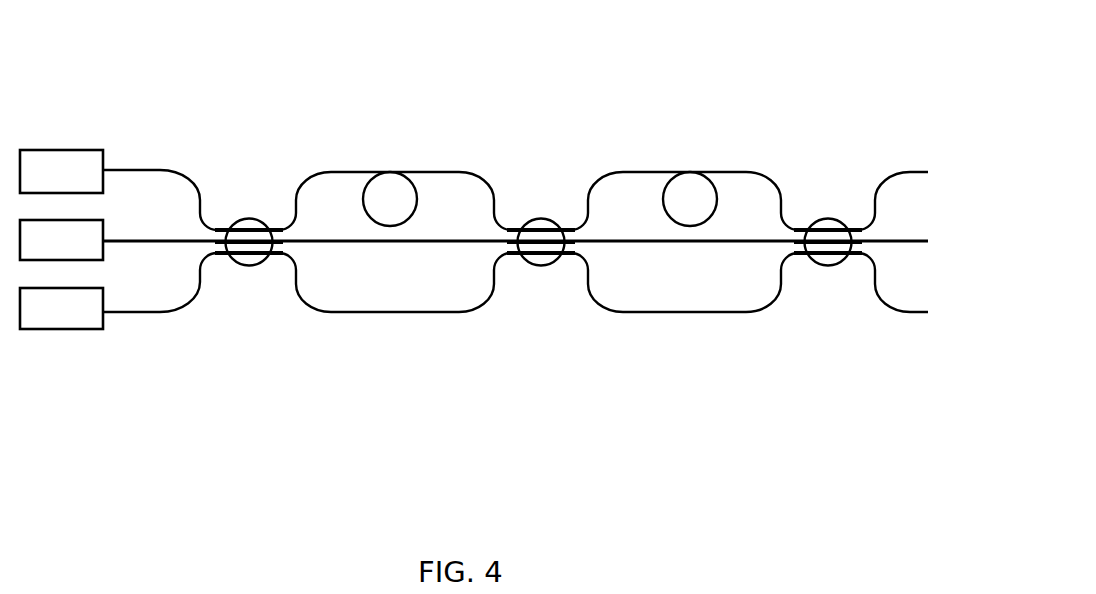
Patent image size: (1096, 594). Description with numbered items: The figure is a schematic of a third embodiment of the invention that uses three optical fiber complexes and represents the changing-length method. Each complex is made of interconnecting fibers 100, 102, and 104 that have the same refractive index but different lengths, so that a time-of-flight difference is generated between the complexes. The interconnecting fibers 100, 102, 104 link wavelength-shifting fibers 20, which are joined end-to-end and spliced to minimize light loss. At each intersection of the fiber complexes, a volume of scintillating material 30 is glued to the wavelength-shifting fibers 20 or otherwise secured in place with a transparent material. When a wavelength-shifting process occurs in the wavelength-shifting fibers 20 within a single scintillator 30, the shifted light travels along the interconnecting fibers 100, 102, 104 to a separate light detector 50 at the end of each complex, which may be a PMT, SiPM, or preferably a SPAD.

The light detector 50 is at (60, 150).
The wavelength-shifting fiber 20 is at (220, 255).
The scintillating material 30 is at (247, 218).
The interconnecting fiber 100 is at (392, 172).
The interconnecting fiber 102 is at (455, 238).
The interconnecting fiber 104 is at (412, 313).